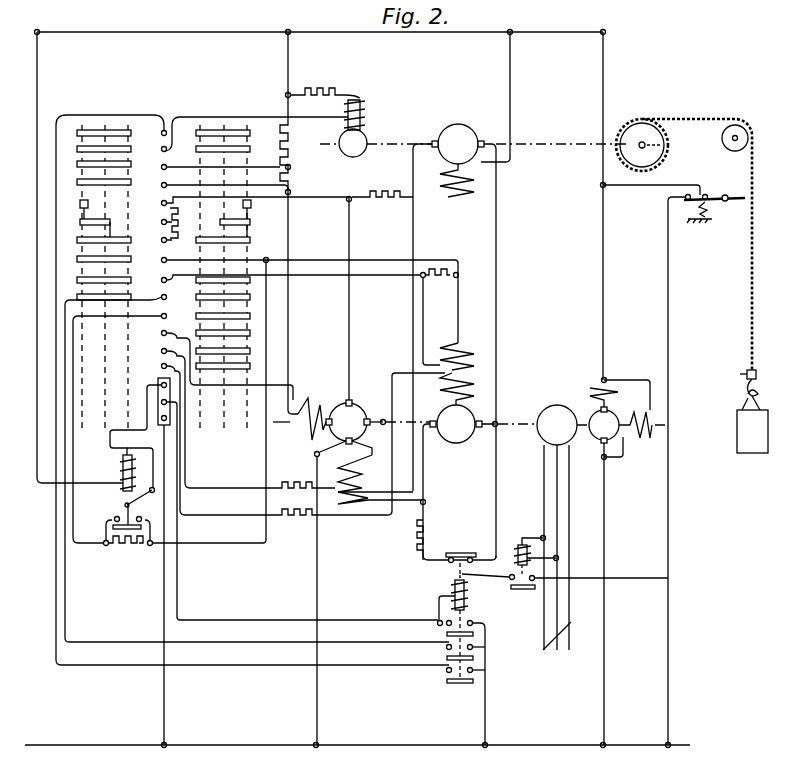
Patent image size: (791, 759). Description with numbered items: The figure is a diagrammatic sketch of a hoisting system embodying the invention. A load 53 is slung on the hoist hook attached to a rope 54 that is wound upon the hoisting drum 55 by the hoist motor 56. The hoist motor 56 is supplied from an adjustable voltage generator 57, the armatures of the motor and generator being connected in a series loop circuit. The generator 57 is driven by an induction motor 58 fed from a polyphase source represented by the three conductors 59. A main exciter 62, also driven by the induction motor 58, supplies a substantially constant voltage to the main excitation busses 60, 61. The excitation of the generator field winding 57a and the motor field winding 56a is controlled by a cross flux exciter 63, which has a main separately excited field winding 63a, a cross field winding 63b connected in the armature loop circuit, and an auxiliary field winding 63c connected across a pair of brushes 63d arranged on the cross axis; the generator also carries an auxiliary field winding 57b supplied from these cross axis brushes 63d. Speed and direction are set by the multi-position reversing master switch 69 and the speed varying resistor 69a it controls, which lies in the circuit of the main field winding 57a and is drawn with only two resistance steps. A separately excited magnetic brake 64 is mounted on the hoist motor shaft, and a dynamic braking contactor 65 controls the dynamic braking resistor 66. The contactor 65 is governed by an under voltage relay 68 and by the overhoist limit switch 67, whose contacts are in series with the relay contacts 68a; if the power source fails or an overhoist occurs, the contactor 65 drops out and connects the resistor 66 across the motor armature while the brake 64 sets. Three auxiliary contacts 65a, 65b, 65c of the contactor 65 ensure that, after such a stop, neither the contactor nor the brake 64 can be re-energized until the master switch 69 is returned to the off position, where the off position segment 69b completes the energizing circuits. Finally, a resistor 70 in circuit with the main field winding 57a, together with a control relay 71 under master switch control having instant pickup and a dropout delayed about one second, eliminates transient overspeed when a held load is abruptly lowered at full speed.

The load 53 is at (754, 453).
The rope 54 is at (750, 253).
The hoisting drum 55 is at (665, 138).
The hoist motor 56 is at (470, 132).
The motor field winding 56a is at (455, 196).
The adjustable voltage generator 57 is at (456, 443).
The generator field winding 57a is at (462, 346).
The auxiliary field winding 57b is at (462, 380).
The induction motor 58 is at (557, 405).
The three conductors 59 is at (565, 632).
The main excitation bus 60 is at (125, 32).
The main excitation bus 61 is at (60, 745).
The main exciter 62 is at (612, 414).
The cross flux exciter 63 is at (356, 405).
The main separately excited field winding 63a is at (304, 404).
The cross field winding 63b is at (344, 503).
The auxiliary field winding 63c is at (352, 480).
The brushes 63d is at (346, 592).
The magnetic brake 64 is at (360, 130).
The dynamic braking contactor 65 is at (464, 600).
The auxiliary contact 65a is at (472, 624).
The auxiliary contact 65b is at (446, 646).
The auxiliary contact 65c is at (446, 669).
The dynamic braking resistor 66 is at (415, 532).
The limit switch 67 is at (722, 196).
The under voltage relay 68 is at (514, 573).
The contacts 68a is at (510, 580).
The master switch 69 is at (173, 90).
The variable resistor 69a is at (168, 215).
The off position segment 69b is at (157, 378).
The resistor 70 is at (108, 546).
The control relay 71 is at (120, 470).